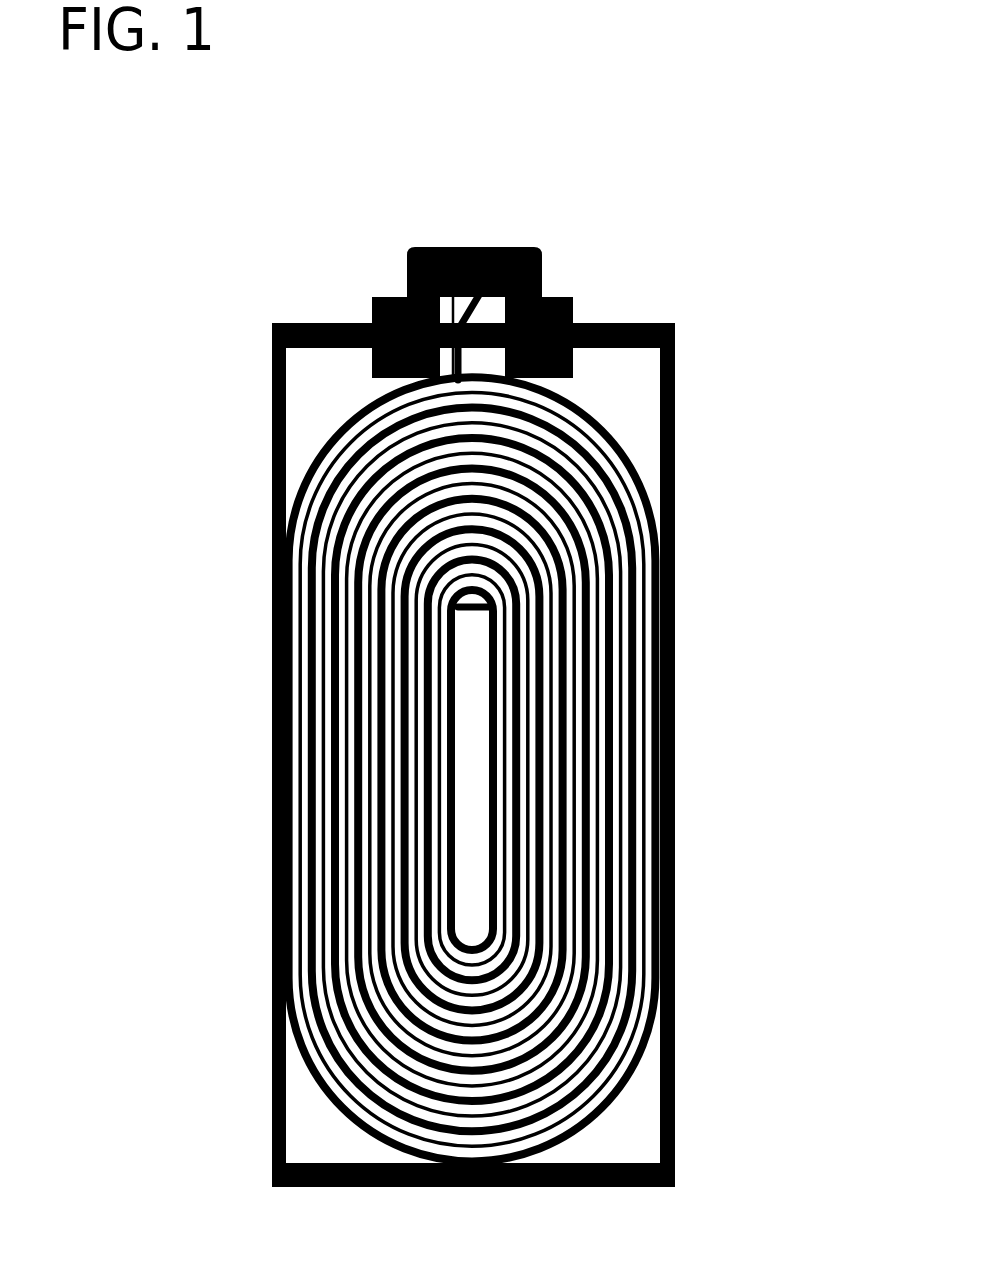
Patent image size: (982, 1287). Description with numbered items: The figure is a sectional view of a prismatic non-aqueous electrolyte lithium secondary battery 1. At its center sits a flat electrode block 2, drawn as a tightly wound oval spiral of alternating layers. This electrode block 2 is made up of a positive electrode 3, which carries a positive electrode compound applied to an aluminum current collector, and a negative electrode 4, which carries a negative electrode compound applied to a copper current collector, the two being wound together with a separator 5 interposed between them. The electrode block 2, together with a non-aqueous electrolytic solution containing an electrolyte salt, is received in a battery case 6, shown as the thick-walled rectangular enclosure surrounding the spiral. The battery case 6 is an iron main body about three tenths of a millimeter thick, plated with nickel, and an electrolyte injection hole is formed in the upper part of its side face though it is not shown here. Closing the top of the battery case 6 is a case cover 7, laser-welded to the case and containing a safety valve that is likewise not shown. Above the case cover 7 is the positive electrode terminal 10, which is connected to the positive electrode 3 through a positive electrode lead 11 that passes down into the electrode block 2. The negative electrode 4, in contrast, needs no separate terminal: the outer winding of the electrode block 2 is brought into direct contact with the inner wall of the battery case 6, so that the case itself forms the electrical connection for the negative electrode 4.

The lithium secondary battery 1 is at (260, 960).
The electrode block 2 is at (587, 750).
The positive electrode 3 is at (633, 877).
The negative electrode 4 is at (677, 447).
The separator 5 is at (320, 450).
The battery case 6 is at (272, 485).
The case cover 7 is at (302, 323).
The positive electrode terminal 10 is at (407, 263).
The positive electrode lead 11 is at (520, 250).